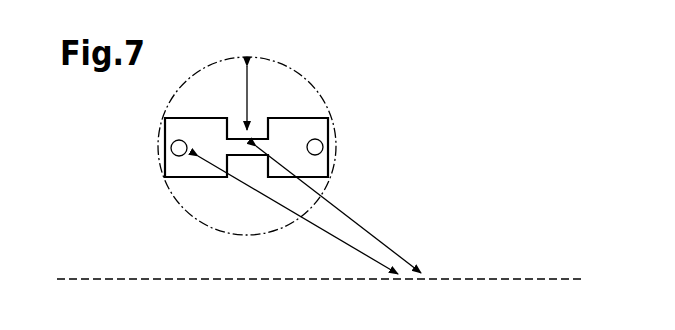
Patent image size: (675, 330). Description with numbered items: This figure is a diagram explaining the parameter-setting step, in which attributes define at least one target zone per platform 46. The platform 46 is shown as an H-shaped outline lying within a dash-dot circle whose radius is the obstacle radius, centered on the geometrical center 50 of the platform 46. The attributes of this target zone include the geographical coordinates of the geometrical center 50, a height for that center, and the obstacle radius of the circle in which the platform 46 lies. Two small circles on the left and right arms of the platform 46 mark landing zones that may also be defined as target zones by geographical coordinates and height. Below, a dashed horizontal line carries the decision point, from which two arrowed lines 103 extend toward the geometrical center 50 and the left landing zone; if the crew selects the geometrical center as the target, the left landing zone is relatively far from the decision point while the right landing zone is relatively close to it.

The platform 46 is at (329, 61).
The geometrical center 50 is at (250, 158).
The measurement beams 103 is at (320, 227).